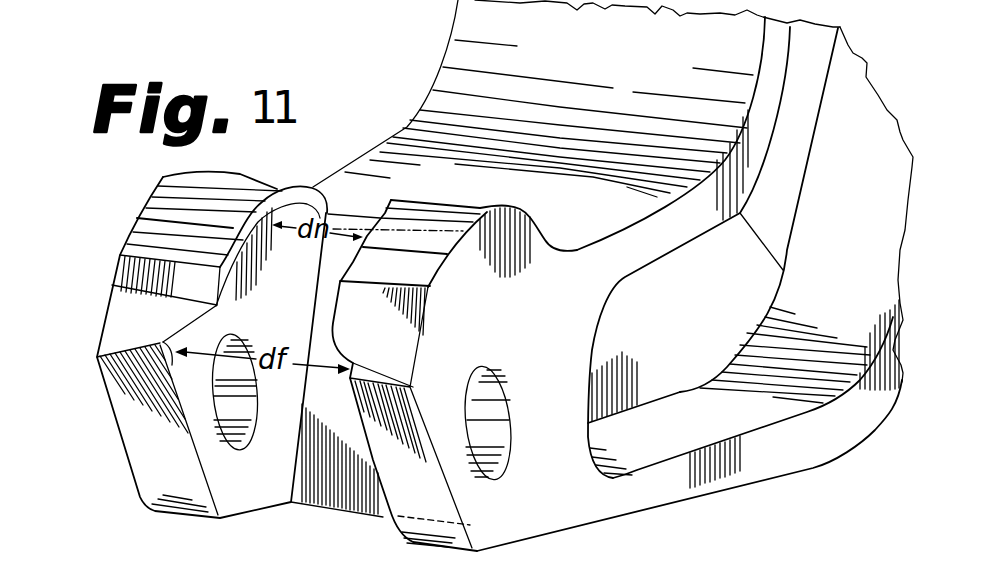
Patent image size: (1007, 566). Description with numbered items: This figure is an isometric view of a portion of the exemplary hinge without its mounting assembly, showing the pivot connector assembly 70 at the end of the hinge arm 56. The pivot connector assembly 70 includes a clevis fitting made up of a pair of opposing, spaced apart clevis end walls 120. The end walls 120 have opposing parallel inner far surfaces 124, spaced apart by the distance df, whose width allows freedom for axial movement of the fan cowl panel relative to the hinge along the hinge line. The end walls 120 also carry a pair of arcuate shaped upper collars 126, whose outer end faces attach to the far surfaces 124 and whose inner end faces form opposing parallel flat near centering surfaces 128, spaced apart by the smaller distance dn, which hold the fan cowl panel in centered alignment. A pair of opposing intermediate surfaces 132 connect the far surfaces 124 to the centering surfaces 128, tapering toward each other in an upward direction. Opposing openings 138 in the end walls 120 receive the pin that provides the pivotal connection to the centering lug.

The arm 56 is at (743, 60).
The pivot connector assembly 70 is at (386, 199).
The clevis end walls 120 is at (103, 393).
The far surfaces 124 is at (160, 343).
The upper collars 126 is at (233, 185).
The centering surfaces 128 is at (277, 185).
The intermediate surfaces 132 is at (215, 322).
The openings 138 is at (498, 436).